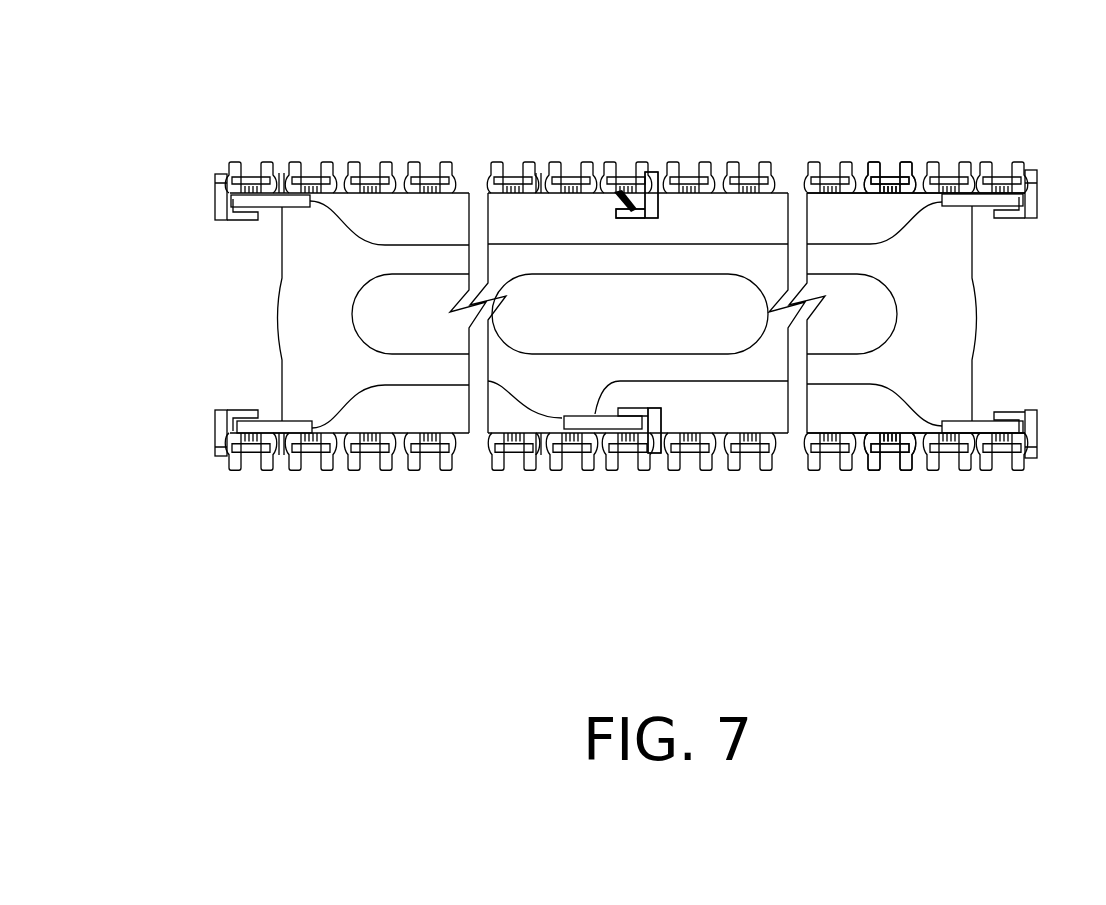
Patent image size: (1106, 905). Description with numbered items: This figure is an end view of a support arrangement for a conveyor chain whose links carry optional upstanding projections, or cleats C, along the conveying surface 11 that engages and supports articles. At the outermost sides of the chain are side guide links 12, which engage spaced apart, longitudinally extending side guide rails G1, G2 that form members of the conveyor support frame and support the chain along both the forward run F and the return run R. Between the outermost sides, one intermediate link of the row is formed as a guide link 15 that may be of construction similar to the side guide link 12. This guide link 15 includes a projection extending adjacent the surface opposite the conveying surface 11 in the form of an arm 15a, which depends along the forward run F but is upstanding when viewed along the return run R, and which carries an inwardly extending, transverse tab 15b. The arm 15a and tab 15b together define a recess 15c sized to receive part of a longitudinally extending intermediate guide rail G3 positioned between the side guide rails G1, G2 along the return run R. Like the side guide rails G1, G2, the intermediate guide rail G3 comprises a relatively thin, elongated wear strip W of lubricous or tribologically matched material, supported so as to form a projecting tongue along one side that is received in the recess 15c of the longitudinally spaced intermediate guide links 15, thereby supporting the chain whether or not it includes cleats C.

The conveying surface 11 is at (936, 138).
The side guide link 12 is at (215, 150).
The cleats C is at (324, 163).
The wear strip W is at (266, 419).
The forward run F is at (868, 138).
The return run R is at (893, 497).
The guide link 15 is at (632, 164).
The arm 15a is at (660, 217).
The transverse tab 15b is at (616, 215).
The recess 15c is at (617, 193).
The side guide rail G1 is at (290, 403).
The side guide rail G2 is at (990, 408).
The intermediate guide rail G3 is at (577, 417).